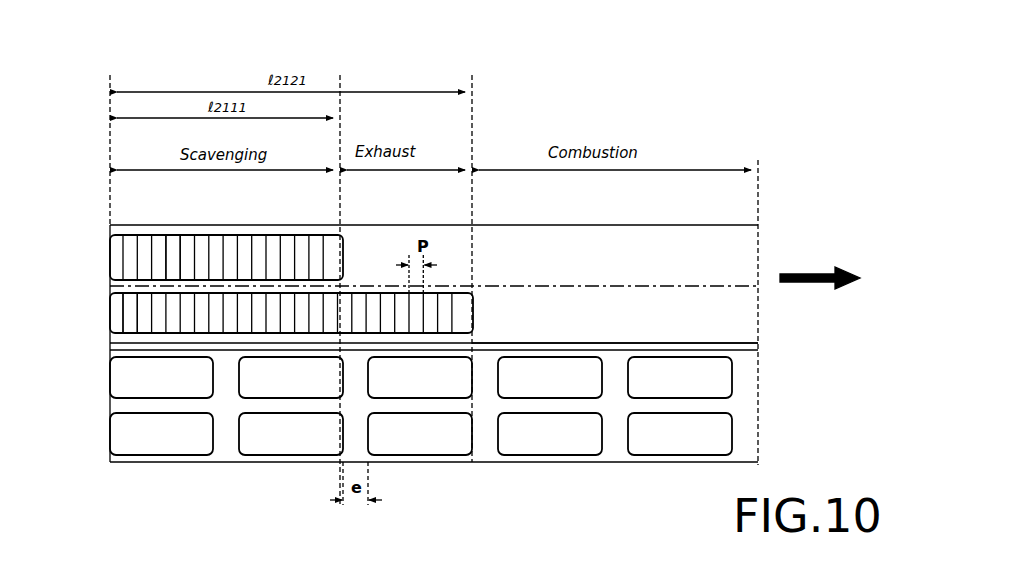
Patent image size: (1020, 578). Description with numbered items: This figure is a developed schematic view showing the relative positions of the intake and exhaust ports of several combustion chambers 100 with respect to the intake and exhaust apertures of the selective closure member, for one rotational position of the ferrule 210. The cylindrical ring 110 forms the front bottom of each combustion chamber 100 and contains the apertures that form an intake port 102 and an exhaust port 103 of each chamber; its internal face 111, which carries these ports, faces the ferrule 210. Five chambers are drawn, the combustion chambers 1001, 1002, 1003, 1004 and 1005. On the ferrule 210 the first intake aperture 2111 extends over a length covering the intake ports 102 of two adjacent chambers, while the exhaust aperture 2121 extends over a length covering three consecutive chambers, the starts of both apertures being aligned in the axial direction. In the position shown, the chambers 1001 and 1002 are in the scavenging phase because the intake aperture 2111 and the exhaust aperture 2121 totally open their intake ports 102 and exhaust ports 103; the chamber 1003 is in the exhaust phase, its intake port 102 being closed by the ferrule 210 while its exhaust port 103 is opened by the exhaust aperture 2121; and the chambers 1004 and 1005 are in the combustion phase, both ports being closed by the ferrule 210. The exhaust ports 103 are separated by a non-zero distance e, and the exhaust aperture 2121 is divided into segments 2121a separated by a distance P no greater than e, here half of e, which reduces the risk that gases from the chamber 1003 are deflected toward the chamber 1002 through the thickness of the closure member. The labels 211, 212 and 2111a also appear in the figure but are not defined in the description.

The ferrule 210 is at (670, 226).
The first injection region 211 is at (576, 253).
The second region 212 is at (735, 310).
The first intake aperture 2111 is at (112, 243).
The scavenging slot 2111a is at (183, 248).
The exhaust aperture 2121 is at (112, 296).
The segments of the exhaust aperture 2121a is at (132, 322).
The cylindrical ring 110 is at (130, 464).
The internal face of the cylindrical ring 111 is at (222, 452).
The intake port 102 is at (122, 381).
The exhaust port 103 is at (124, 433).
The combustion chamber 100 is at (421, 444).
The first combustion chamber 1001 is at (158, 466).
The second combustion chamber 1002 is at (287, 466).
The third combustion chamber 1003 is at (417, 466).
The fourth combustion chamber 1004 is at (546, 466).
The fifth combustion chamber 1005 is at (675, 466).